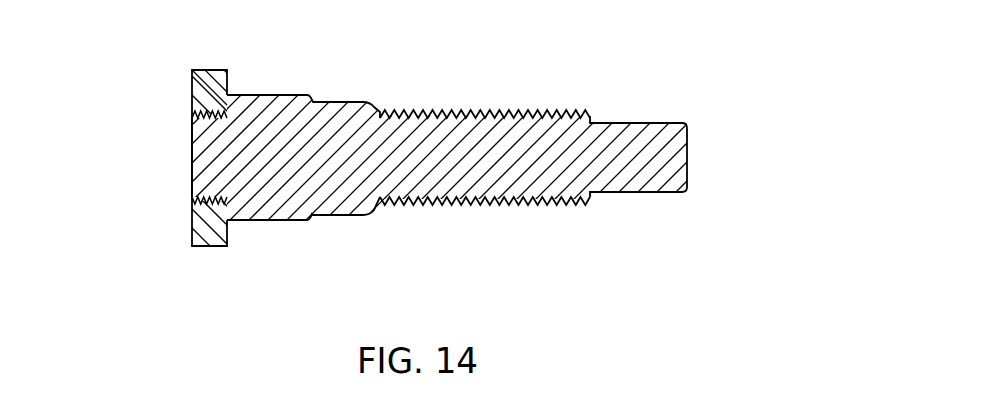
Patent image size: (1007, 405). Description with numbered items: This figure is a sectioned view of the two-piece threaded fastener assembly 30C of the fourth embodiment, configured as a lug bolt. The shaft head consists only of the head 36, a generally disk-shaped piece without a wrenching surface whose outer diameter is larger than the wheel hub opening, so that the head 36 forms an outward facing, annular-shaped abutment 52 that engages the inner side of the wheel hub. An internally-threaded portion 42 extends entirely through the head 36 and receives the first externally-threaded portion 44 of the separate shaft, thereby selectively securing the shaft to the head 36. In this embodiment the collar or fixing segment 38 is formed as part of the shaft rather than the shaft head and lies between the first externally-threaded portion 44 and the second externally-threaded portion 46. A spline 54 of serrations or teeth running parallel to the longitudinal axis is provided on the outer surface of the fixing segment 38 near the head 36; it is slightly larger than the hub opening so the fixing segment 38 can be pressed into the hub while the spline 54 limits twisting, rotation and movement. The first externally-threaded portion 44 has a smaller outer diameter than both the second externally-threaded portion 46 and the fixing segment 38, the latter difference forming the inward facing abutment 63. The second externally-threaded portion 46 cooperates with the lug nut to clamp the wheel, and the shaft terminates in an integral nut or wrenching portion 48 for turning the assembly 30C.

The threaded fastener assembly 30C is at (752, 113).
The head 36 is at (192, 223).
The inward facing abutment 63 is at (192, 92).
The internally-threaded portion 42 is at (192, 190).
The first externally-threaded portion 44 is at (192, 198).
The abutment 52 is at (228, 223).
The spline 54 is at (288, 221).
The fixing segment 38 is at (358, 218).
The second externally-threaded portion 46 is at (538, 112).
The wrenching portion 48 is at (638, 193).